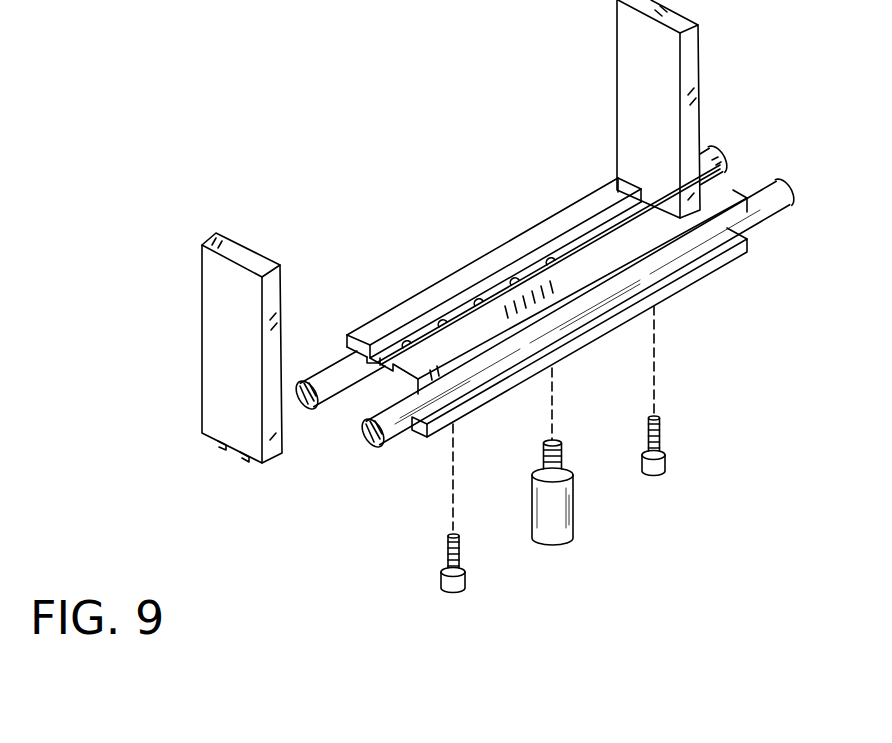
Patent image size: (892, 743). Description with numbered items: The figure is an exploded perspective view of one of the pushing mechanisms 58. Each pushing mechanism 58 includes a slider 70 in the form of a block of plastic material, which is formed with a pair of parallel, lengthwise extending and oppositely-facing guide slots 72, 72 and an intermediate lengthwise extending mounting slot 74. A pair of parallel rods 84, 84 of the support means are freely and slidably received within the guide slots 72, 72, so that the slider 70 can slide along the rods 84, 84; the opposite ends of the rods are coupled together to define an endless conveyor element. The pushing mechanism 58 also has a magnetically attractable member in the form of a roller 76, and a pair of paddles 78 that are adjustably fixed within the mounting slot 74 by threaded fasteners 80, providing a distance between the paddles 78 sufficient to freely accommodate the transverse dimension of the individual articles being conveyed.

The pushing mechanism 58 is at (477, 121).
The slider 70 is at (553, 215).
The guide slots 72 is at (345, 362).
The mounting slot 74 is at (503, 280).
The roller 76 is at (575, 520).
The paddle 78 is at (663, 103).
The threaded fasteners 80 is at (466, 580).
The parallel rods 84 is at (305, 418).